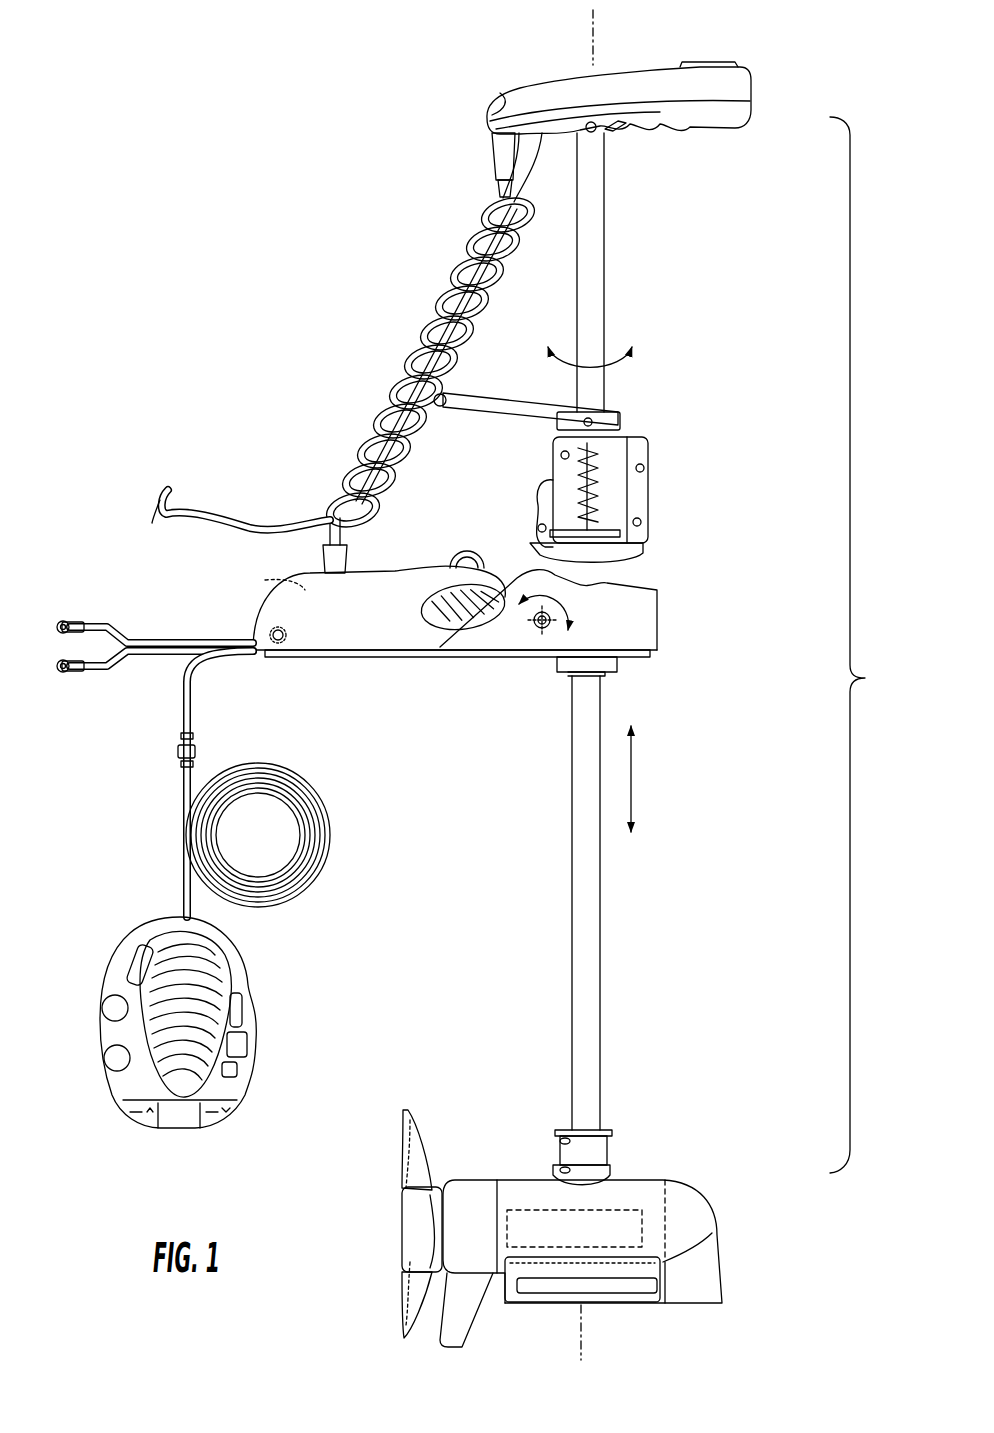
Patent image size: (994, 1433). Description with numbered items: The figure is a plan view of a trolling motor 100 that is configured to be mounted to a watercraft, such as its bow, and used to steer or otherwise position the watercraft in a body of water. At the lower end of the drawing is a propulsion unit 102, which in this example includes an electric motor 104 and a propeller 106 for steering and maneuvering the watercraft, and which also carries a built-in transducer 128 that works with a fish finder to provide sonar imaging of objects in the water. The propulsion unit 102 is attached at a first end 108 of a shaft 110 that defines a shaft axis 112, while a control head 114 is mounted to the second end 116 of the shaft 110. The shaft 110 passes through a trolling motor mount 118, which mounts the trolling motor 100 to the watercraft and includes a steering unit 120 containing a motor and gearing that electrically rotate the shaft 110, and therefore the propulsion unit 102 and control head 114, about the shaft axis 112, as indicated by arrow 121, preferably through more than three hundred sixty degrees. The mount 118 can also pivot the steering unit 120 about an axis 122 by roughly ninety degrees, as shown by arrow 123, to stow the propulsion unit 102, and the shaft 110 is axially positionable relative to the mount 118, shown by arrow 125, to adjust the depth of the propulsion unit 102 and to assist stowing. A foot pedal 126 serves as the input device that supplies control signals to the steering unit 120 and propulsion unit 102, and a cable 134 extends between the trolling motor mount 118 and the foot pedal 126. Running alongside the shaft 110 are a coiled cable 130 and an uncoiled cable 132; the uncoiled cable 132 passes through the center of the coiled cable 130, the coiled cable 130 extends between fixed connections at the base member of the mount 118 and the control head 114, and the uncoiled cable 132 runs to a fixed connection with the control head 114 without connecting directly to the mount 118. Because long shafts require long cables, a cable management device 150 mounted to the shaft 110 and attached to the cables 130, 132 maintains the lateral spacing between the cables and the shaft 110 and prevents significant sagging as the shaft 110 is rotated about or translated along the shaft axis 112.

The trolling motor 100 is at (749, 283).
The propulsion unit 102 is at (664, 1133).
The electric motor 104 is at (628, 1210).
The propeller 106 is at (412, 1275).
The first end 108 is at (573, 1122).
The shaft 110 is at (587, 890).
The shaft axis 112 is at (580, 1318).
The control head 114 is at (690, 80).
The second end 116 is at (606, 137).
The trolling motor mount 118 is at (422, 682).
The steering unit 120 is at (650, 483).
The arrow 121 is at (622, 360).
The axis 122 is at (540, 627).
The arrow 123 is at (574, 612).
The arrow 125 is at (632, 772).
The foot pedal 126 is at (220, 968).
The transducer 128 is at (638, 1290).
The coiled cable 130 is at (432, 335).
The uncoiled cable 132 is at (283, 521).
The cable 134 is at (182, 697).
The cable management device 150 is at (632, 422).